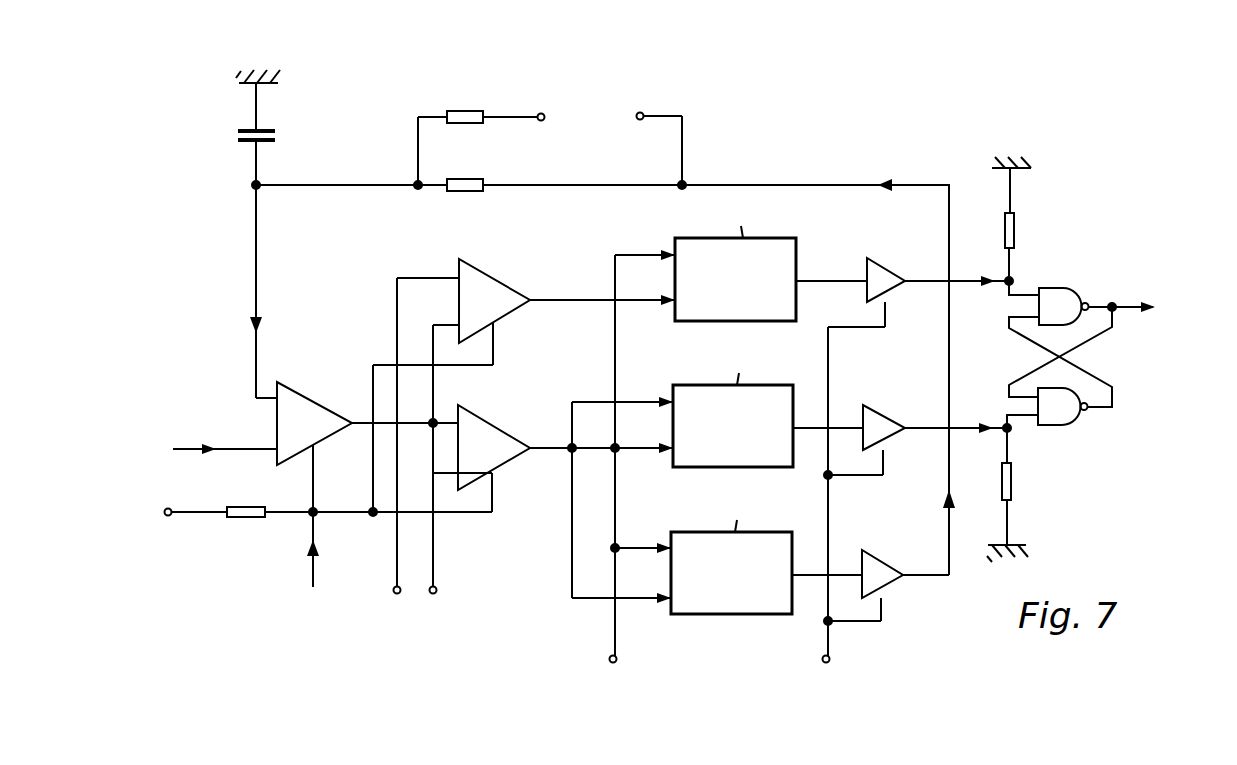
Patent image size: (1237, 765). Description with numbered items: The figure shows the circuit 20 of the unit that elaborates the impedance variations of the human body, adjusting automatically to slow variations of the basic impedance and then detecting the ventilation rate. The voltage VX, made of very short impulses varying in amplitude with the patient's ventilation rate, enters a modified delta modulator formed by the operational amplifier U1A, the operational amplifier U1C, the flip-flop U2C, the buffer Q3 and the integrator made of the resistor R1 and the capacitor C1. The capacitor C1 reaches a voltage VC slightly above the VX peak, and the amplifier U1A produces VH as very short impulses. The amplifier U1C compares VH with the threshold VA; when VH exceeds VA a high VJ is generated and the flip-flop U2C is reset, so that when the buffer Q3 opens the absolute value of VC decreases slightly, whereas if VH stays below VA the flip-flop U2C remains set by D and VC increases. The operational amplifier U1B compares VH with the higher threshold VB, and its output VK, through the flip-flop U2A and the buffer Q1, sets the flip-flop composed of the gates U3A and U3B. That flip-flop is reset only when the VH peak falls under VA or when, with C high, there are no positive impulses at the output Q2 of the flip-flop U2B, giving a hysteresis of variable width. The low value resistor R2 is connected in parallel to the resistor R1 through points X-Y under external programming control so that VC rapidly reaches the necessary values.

The control circuit 20 is at (922, 156).
The capacitor C1 is at (274, 136).
The resistor R1 is at (465, 171).
The low value resistor R2 is at (465, 103).
The operational amplifier U1A is at (298, 388).
The operational amplifier U1B is at (480, 268).
The operational amplifier U1C is at (481, 414).
The flip-flop U2A is at (697, 326).
The flip-flop U2B is at (692, 472).
The flip-flop U2C is at (690, 619).
The buffer Q1 is at (884, 267).
The output of flip-flop U2/B Q2 is at (884, 414).
The buffer Q3 is at (887, 560).
The NAND gate of flip-flop U3A is at (1056, 290).
The NAND gate of flip-flop U3B is at (1060, 425).